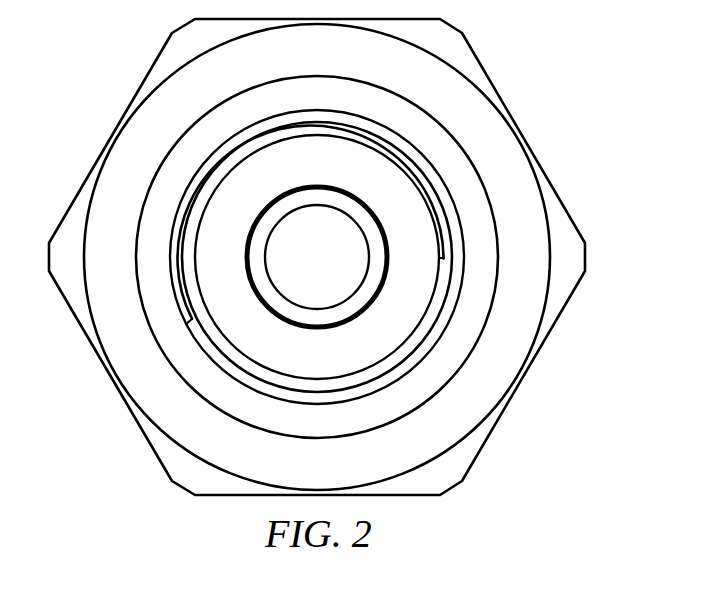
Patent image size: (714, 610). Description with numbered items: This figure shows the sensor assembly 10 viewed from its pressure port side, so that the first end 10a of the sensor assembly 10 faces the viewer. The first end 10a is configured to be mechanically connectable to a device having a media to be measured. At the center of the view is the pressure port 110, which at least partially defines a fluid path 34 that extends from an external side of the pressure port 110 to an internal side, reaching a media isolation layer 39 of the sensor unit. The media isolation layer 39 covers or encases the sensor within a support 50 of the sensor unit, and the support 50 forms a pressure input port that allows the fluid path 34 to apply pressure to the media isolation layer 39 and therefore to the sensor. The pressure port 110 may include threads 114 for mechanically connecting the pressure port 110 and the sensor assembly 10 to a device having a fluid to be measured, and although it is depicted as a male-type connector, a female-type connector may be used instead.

The sensor assembly 10 is at (118, 29).
The first end 10a is at (147, 153).
The media isolation layer 39 is at (343, 233).
The pressure port 110 is at (415, 250).
The threads 114 is at (408, 343).
The support 50 is at (300, 202).
The fluid path 34 is at (284, 278).